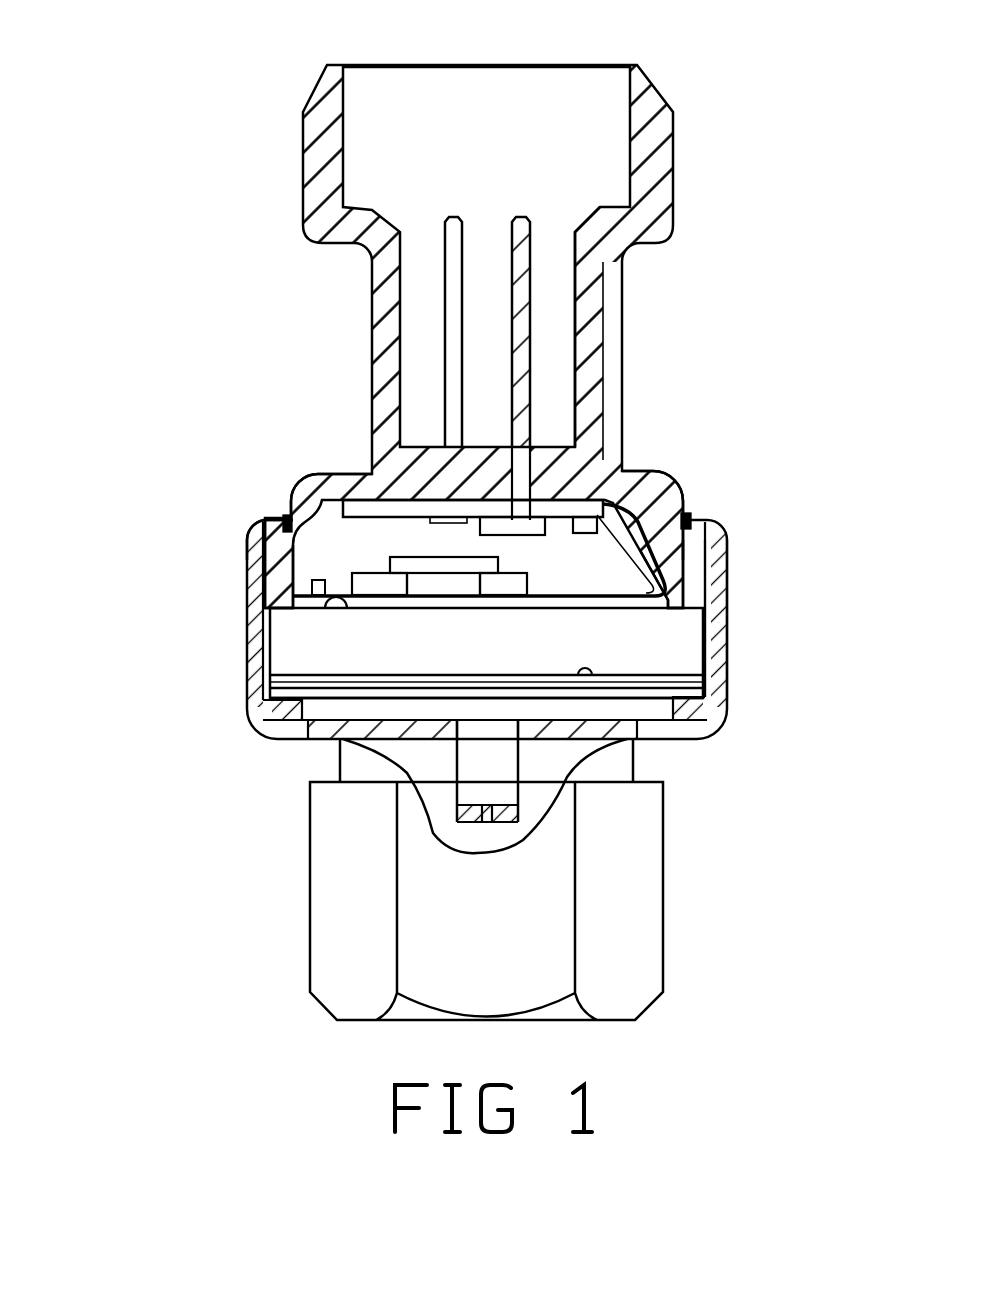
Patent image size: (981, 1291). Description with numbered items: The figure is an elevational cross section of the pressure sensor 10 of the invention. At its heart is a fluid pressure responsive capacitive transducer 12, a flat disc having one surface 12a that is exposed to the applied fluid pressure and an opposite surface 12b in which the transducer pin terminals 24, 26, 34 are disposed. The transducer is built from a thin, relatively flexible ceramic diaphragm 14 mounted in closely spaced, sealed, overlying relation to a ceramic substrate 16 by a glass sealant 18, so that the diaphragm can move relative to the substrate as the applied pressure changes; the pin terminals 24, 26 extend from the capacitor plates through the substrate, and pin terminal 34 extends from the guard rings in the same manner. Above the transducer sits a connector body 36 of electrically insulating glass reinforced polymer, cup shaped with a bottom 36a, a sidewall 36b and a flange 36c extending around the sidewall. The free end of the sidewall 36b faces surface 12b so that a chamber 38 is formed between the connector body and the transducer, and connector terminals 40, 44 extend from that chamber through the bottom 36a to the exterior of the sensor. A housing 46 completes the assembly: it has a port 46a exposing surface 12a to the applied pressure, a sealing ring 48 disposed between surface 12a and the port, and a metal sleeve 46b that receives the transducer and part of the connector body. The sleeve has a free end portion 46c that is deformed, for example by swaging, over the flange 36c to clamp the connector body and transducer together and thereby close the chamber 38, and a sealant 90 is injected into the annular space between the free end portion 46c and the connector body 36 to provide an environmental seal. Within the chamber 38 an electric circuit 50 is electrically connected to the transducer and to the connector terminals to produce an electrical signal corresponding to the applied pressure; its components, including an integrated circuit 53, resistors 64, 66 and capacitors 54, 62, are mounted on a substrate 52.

The pressure sensor 10 is at (717, 85).
The fluid pressure responsive capacitive transducer 12 is at (695, 624).
The transducer surface 12a is at (343, 700).
The opposite transducer surface 12b is at (340, 608).
The diaphragm 14 is at (680, 688).
The ceramic substrate 16 is at (685, 663).
The glass sealant 18 is at (580, 672).
The pin terminal 24 is at (194, 588).
The pin terminal 26 is at (194, 588).
The pin terminal 34 is at (305, 590).
The connector body 36 is at (626, 303).
The bottom of connector body 36a is at (563, 472).
The sidewall of connector body 36b is at (640, 500).
The flange 36c is at (688, 562).
The chamber 38 is at (340, 527).
The connector terminal 40 is at (452, 325).
The connector terminal 44 is at (534, 298).
The housing 46 is at (236, 716).
The port 46a is at (487, 822).
The metal sleeve 46b is at (717, 650).
The free end portion of sleeve 46c is at (275, 517).
The sealing ring 48 is at (713, 727).
The electric circuit 50 is at (428, 597).
The substrate 52 is at (652, 568).
The integrated circuit 53 is at (445, 586).
The capacitor 54 is at (593, 508).
The capacitor 62 is at (370, 580).
The resistor 64 is at (512, 582).
The resistor 66 is at (490, 517).
The sealant 90 is at (288, 518).